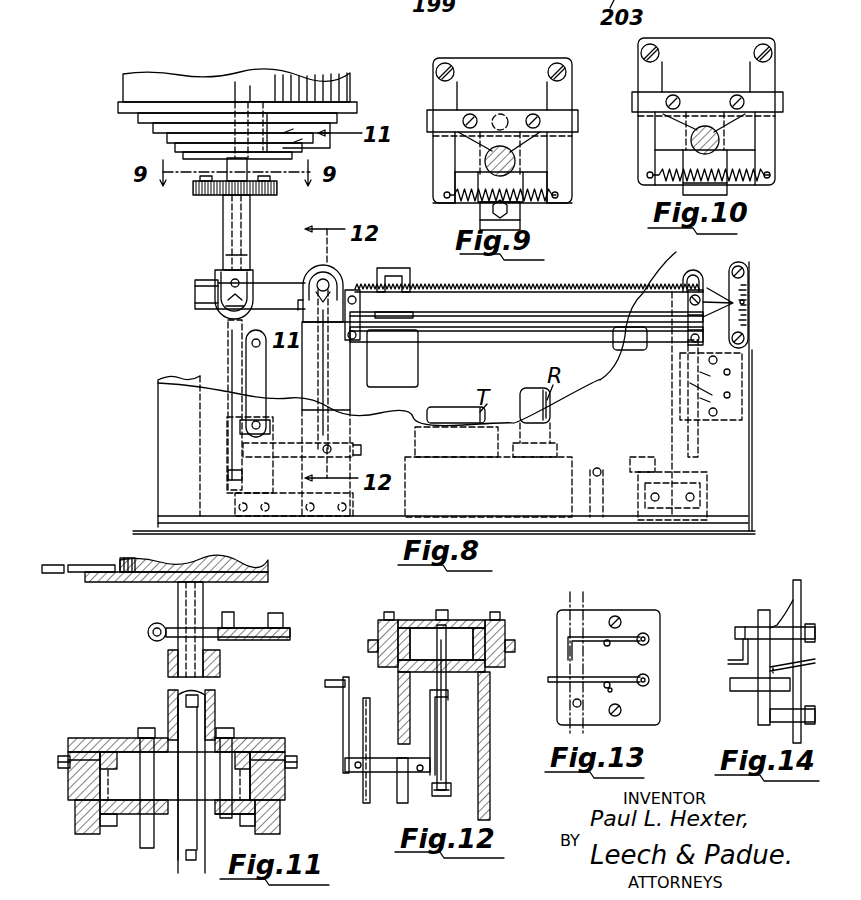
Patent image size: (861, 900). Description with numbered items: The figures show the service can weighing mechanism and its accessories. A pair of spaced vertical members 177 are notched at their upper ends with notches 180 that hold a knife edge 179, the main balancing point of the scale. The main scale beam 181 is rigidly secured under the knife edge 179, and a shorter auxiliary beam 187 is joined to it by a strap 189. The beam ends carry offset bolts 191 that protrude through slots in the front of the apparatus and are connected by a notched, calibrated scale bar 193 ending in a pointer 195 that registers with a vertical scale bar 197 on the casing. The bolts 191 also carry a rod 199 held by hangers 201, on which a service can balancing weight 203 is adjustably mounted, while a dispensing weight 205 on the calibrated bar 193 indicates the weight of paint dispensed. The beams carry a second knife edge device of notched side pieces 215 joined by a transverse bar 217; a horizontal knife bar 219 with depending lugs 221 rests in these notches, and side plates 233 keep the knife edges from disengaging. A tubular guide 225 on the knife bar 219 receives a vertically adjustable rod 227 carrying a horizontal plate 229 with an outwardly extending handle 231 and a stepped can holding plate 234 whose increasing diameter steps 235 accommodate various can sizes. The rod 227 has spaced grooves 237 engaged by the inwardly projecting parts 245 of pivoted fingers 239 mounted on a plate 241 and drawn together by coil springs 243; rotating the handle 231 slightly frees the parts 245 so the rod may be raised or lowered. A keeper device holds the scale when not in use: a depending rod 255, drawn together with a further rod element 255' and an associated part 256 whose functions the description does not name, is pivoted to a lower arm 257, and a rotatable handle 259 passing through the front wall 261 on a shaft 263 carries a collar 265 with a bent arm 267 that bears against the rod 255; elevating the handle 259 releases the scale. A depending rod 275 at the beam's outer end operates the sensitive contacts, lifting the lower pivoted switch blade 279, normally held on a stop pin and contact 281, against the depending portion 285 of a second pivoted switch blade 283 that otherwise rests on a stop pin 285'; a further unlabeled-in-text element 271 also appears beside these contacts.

In FIG. 8, the increasing diameter steps 235 is at (160, 126).
In FIG. 8, the plate 241 is at (265, 196).
In FIG. 9, the plate 241 is at (529, 70).
In FIG. 10, the plate 241 is at (740, 50).
In FIG. 9, the vertically adjustable rod 227 is at (497, 146).
In FIG. 10, the vertically adjustable rod 227 is at (700, 127).
In FIG. 11, the vertically adjustable rod 227 is at (200, 601).
In FIG. 8, the auxiliary beam 187 is at (290, 264).
In FIG. 11, the auxiliary beam 187 is at (78, 752).
In FIG. 12, the auxiliary beam 187 is at (388, 620).
In FIG. 8, the notches 180 is at (330, 262).
In FIG. 8, the strap 189 is at (195, 295).
In FIG. 8, the shaft / bolt 255' is at (204, 380).
In FIG. 11, the shaft / bolt 255' is at (106, 804).
In FIG. 8, the rotatable handle 259 is at (257, 356).
In FIG. 12, the rotatable handle 259 is at (345, 680).
In FIG. 8, the shaft 263 is at (247, 427).
In FIG. 11, the shaft 263 is at (258, 783).
In FIG. 8, the lower arm 257 is at (279, 452).
In FIG. 8, the vertical members 177 is at (334, 280).
In FIG. 12, the vertical members 177 is at (378, 645).
In FIG. 8, the depending rod 255 is at (322, 403).
In FIG. 8, the calibrated scale bar 193 is at (597, 279).
In FIG. 8, the rod 199 is at (538, 337).
In FIG. 8, the service can balancing weight 203 is at (635, 352).
In FIG. 8, the dispensing weight 205 is at (405, 355).
In FIG. 8, the hangers 201 is at (352, 340).
In FIG. 8, the offset bolts 191 is at (697, 292).
In FIG. 8, the pointer 195 is at (713, 288).
In FIG. 8, the vertically arranged scale bar 197 is at (752, 292).
In FIG. 8, the depending rod 275 is at (705, 431).
In FIG. 13, the depending rod 275 is at (600, 584).
In FIG. 8, the arm 267 is at (710, 490).
In FIG. 12, the arm 267 is at (450, 691).
In FIG. 9, the inwardly projecting parts 245 is at (513, 153).
In FIG. 10, the inwardly projecting parts 245 is at (735, 135).
In FIG. 9, the pivoted fingers 239 is at (555, 163).
In FIG. 10, the pivoted fingers 239 is at (770, 145).
In FIG. 9, the coil springs 243 is at (530, 202).
In FIG. 10, the coil springs 243 is at (667, 182).
In FIG. 11, the handle 231 is at (64, 565).
In FIG. 11, the stepped service can holding plate 234 is at (268, 562).
In FIG. 11, the horizontal plate 229 is at (268, 578).
In FIG. 11, the tubular guide 225 is at (212, 706).
In FIG. 11, the horizontal bar 219 is at (112, 738).
In FIG. 11, the notched side pieces 215 is at (75, 812).
In FIG. 11, the side plates 233 is at (68, 745).
In FIG. 11, the depending lugs 221 is at (270, 745).
In FIG. 11, the grooves 237 is at (178, 855).
In FIG. 11, the transverse bar 217 is at (228, 822).
In FIG. 12, the main scale beam 181 is at (462, 650).
In FIG. 12, the knife edge 179 is at (476, 628).
In FIG. 12, the rod 256 is at (445, 740).
In FIG. 12, the collar 265 is at (405, 780).
In FIG. 12, the front wall 261 is at (367, 803).
In FIG. 13, the second pivoted switch blade 283 is at (648, 636).
In FIG. 13, the depending portion 285 is at (570, 616).
In FIG. 14, the depending portion 285 is at (715, 633).
In FIG. 13, the stop pin 285' is at (613, 668).
In FIG. 14, the stop pin 285' is at (775, 603).
In FIG. 13, the lower pivoted switch blade 279 is at (648, 678).
In FIG. 14, the lower pivoted switch blade 279 is at (730, 686).
In FIG. 13, the hole 271 is at (573, 702).
In FIG. 13, the stop pin and contact 281 is at (610, 690).
In FIG. 14, the stop pin and contact 281 is at (748, 695).